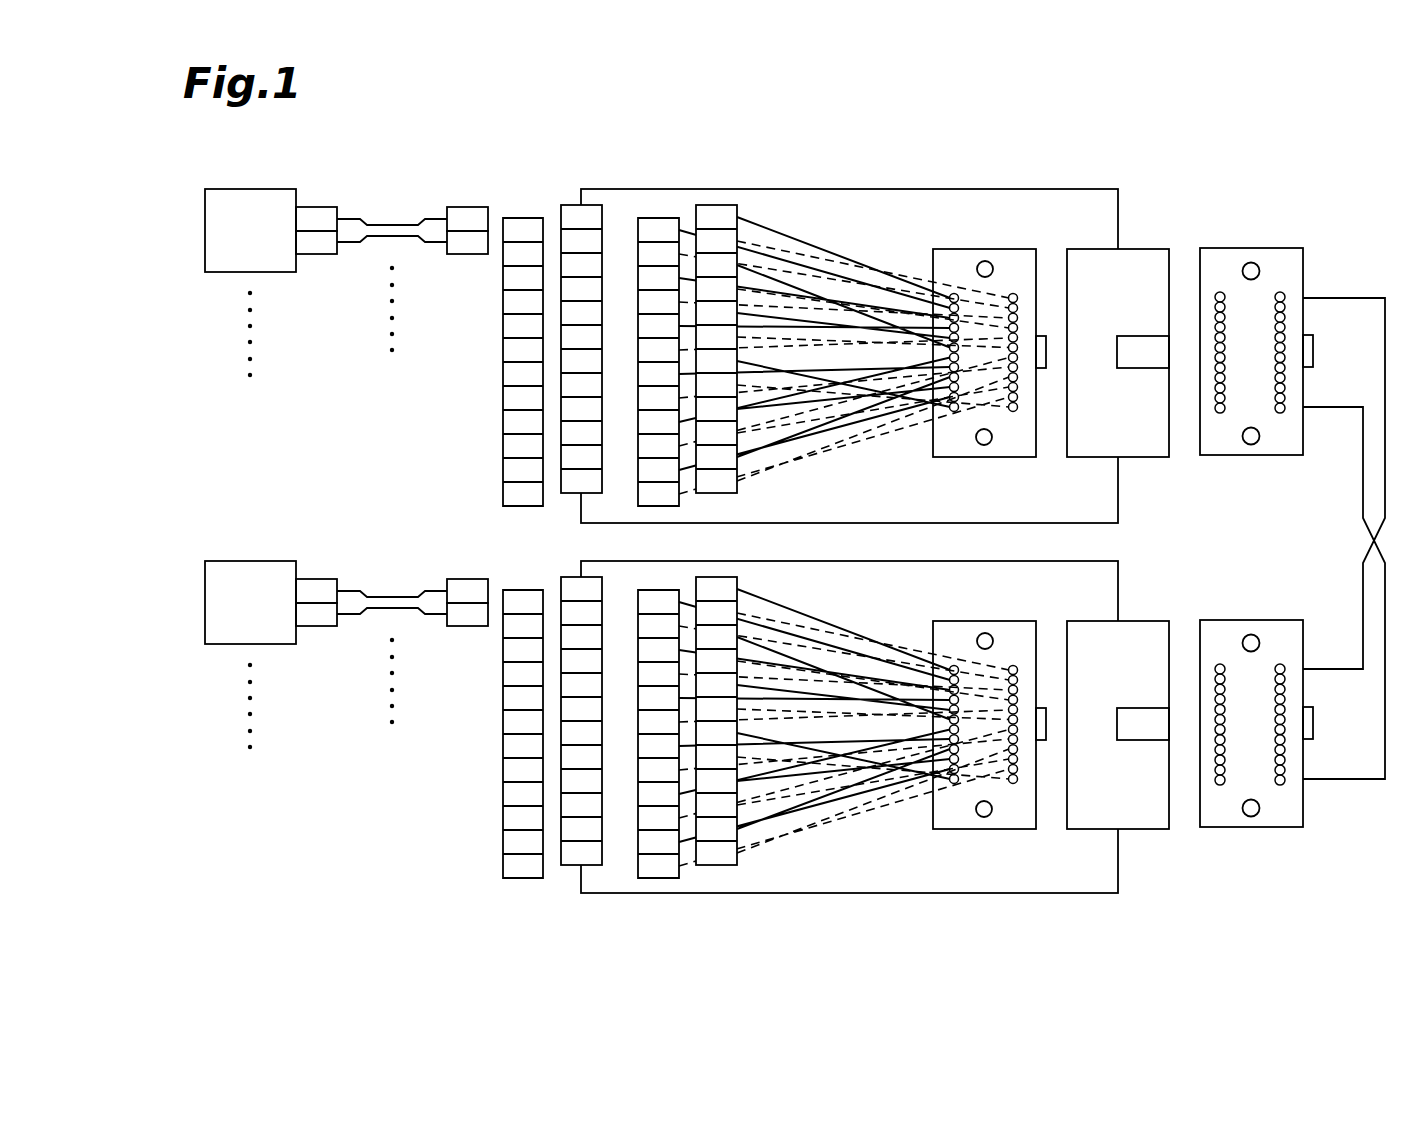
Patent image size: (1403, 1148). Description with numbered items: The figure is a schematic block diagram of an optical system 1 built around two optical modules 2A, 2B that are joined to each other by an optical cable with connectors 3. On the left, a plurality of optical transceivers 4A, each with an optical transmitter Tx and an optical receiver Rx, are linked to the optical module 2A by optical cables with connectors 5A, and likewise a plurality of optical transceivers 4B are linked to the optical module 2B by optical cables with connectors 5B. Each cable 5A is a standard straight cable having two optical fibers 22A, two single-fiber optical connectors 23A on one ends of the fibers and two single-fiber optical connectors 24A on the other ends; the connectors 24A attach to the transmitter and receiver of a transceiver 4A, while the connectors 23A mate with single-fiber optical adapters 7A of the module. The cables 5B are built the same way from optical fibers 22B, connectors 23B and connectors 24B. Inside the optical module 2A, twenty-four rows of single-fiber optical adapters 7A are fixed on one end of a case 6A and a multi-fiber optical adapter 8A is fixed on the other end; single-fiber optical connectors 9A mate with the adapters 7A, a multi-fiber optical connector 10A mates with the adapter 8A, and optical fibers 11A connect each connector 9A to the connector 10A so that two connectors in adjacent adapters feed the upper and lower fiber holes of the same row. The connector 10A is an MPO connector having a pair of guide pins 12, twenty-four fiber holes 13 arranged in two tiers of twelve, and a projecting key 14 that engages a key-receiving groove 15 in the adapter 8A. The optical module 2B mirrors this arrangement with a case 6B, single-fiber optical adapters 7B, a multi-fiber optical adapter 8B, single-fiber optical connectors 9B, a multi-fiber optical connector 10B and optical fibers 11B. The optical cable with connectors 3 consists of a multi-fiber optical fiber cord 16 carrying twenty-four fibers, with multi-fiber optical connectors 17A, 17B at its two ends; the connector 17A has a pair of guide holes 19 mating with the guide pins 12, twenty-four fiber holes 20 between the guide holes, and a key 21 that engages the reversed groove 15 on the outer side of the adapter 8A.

The optical system 1 is at (303, 856).
The optical module 2A is at (967, 181).
The optical module 2B is at (977, 898).
The optical cable with connectors 3 is at (1321, 277).
The optical transceiver 4A is at (250, 187).
The optical transceiver 4B is at (250, 559).
The optical cable with connectors 5A is at (391, 213).
The optical cable with connectors 5B is at (391, 585).
The case 6A is at (769, 188).
The case 6B is at (767, 896).
The single-fiber optical adapter 7A is at (569, 203).
The single-fiber optical adapter 7B is at (571, 866).
The multi-fiber optical adapter 8A is at (1133, 248).
The multi-fiber optical adapter 8B is at (1133, 830).
The single-fiber optical connector 9A is at (660, 217).
The single-fiber optical connector 9B is at (660, 589).
The multi-fiber optical connector 10A is at (1010, 248).
The multi-fiber optical connector 10B is at (1010, 831).
The optical fibers 11A is at (779, 249).
The optical fibers 11B is at (779, 621).
The guide pin 12 is at (984, 260).
The fiber hole 13 is at (951, 294).
The key 14 is at (1042, 369).
The key-receiving groove 15 is at (1139, 345).
The multi-fiber optical fiber cord 16 is at (1363, 584).
The multi-fiber optical connector 17A is at (1270, 247).
The multi-fiber optical connector 17B is at (1270, 831).
The guide hole 19 is at (1250, 261).
The fiber hole 20 is at (1216, 293).
The key 21 is at (1314, 351).
The optical fiber 22A is at (348, 217).
The optical fiber 22B is at (348, 589).
The single-fiber optical connector 23A is at (466, 204).
The single-fiber optical connector 23B is at (466, 576).
The single-fiber optical connector 24A is at (316, 204).
The single-fiber optical connector 24B is at (316, 576).